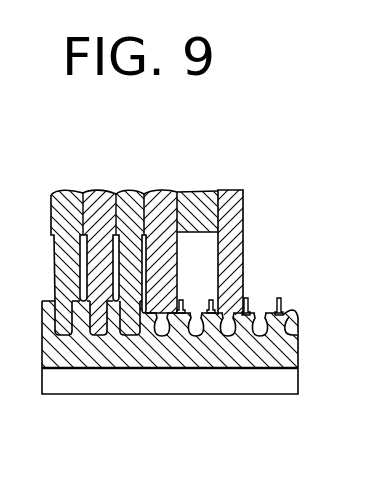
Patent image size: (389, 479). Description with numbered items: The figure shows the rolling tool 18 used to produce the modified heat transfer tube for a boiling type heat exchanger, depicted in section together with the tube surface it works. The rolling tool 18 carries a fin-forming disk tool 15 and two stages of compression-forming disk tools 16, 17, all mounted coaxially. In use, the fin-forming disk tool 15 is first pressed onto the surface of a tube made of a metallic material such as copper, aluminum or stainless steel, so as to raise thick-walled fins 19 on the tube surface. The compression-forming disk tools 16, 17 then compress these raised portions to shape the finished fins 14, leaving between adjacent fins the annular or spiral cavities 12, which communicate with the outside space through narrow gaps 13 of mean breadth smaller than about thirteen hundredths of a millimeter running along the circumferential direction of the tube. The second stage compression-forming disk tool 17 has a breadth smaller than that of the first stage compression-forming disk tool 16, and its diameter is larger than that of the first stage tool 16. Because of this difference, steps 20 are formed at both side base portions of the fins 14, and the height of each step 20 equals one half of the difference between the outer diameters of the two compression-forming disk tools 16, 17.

The cavities 12 is at (257, 335).
The narrow gaps 13 is at (259, 312).
The fins 14 is at (279, 299).
The fin-forming disk tool 15 is at (127, 198).
The first stage compression-forming disk tool 16 is at (165, 196).
The second stage compression-forming disk tool 17 is at (244, 202).
The rolling tool 18 is at (203, 191).
The thick-walled fins 19 is at (50, 333).
The steps 20 is at (296, 314).